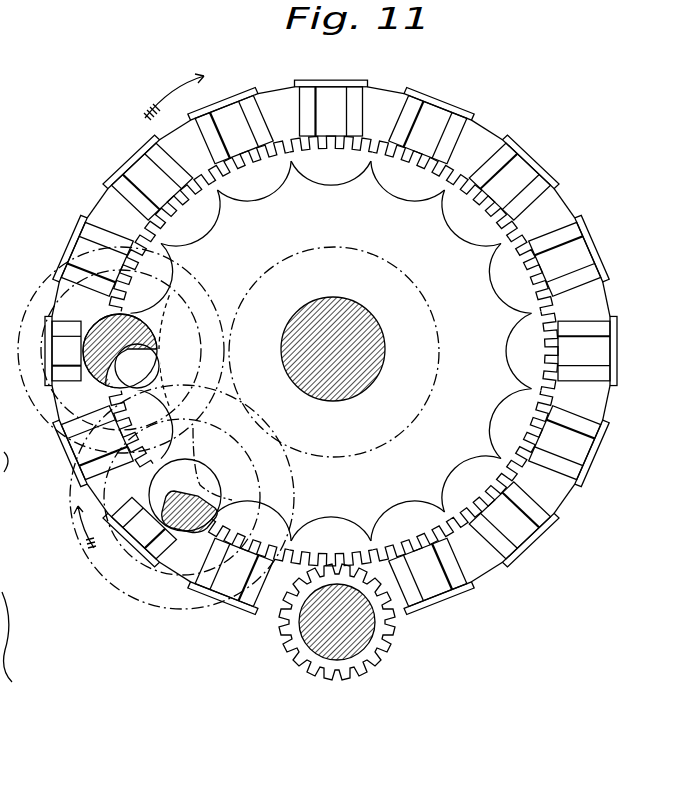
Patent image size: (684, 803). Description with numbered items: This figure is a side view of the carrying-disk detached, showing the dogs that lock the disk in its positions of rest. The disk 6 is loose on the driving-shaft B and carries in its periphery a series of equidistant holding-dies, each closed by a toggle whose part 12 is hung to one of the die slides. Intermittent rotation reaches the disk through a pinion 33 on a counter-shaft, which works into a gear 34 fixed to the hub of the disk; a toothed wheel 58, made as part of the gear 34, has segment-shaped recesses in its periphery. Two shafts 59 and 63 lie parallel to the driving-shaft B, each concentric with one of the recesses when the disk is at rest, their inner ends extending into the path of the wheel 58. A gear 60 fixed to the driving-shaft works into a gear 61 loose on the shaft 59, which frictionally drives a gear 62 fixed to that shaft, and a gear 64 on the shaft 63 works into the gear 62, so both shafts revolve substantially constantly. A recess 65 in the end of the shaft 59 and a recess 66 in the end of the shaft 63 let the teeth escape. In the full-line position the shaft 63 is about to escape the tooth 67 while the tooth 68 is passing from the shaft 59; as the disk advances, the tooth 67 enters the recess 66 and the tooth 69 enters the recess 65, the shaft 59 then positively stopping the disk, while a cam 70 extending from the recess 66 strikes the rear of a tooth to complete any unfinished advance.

The disk 6 is at (330, 333).
The toggle part 12 is at (331, 347).
The pinion 33 is at (340, 622).
The gear 34 is at (331, 351).
The wheel 58 is at (258, 191).
The shaft 59 is at (121, 352).
The gear 60 is at (334, 352).
The gear 61 is at (121, 350).
The gear 62 is at (121, 350).
The shaft 63 is at (190, 512).
The gear 64 is at (182, 497).
The recess 65 is at (137, 366).
The recess 66 is at (185, 495).
The tooth 67 is at (218, 465).
The tooth 68 is at (157, 323).
The tooth 69 is at (158, 379).
The cam 70 is at (182, 497).
The driving-shaft B is at (385, 348).